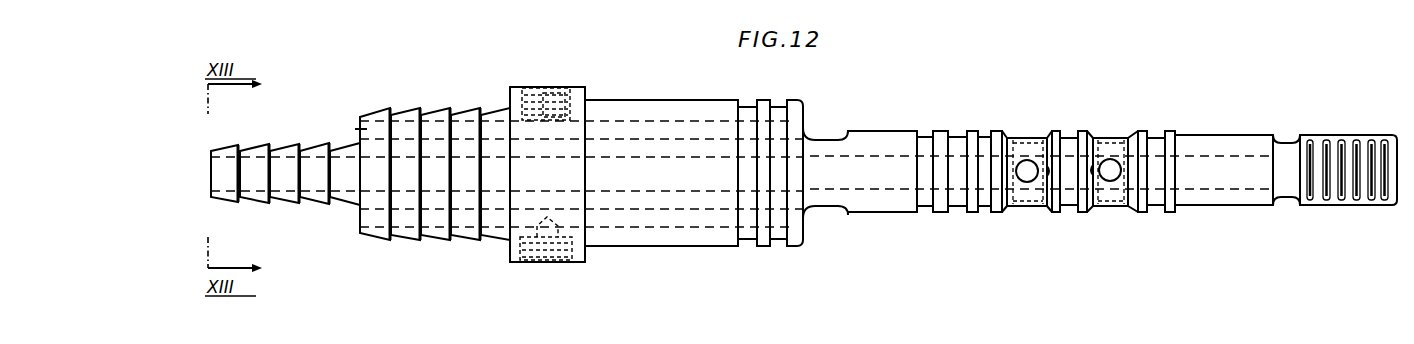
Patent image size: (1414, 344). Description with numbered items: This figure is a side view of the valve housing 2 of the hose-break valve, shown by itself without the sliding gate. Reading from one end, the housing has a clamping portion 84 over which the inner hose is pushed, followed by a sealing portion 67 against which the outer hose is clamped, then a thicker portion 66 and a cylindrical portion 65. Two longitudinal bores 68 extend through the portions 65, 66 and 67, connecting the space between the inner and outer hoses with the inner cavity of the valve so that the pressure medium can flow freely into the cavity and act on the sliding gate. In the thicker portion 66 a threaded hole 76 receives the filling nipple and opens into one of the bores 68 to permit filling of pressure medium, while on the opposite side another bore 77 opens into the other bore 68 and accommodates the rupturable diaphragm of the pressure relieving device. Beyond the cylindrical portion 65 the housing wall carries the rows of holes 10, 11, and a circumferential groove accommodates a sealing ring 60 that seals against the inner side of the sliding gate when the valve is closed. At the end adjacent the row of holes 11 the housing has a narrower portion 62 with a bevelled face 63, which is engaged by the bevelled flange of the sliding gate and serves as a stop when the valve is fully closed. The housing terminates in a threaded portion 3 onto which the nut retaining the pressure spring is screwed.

The valve housing 2 is at (745, 93).
The threaded portion 3 is at (1326, 140).
The row of holes 10 is at (1027, 160).
The row of holes 11 is at (1110, 159).
The sealing ring 60 is at (1068, 137).
The narrower portion 62 is at (1243, 135).
The bevelled face 63 is at (1172, 133).
The cylindrical portion 65 is at (652, 107).
The thicker portion 66 is at (512, 93).
The sealing portion 67 is at (436, 108).
The longitudinal bores 68 is at (367, 129).
The threaded hole 76 is at (553, 87).
The bore 77 is at (560, 262).
The clamping portion 84 is at (285, 194).